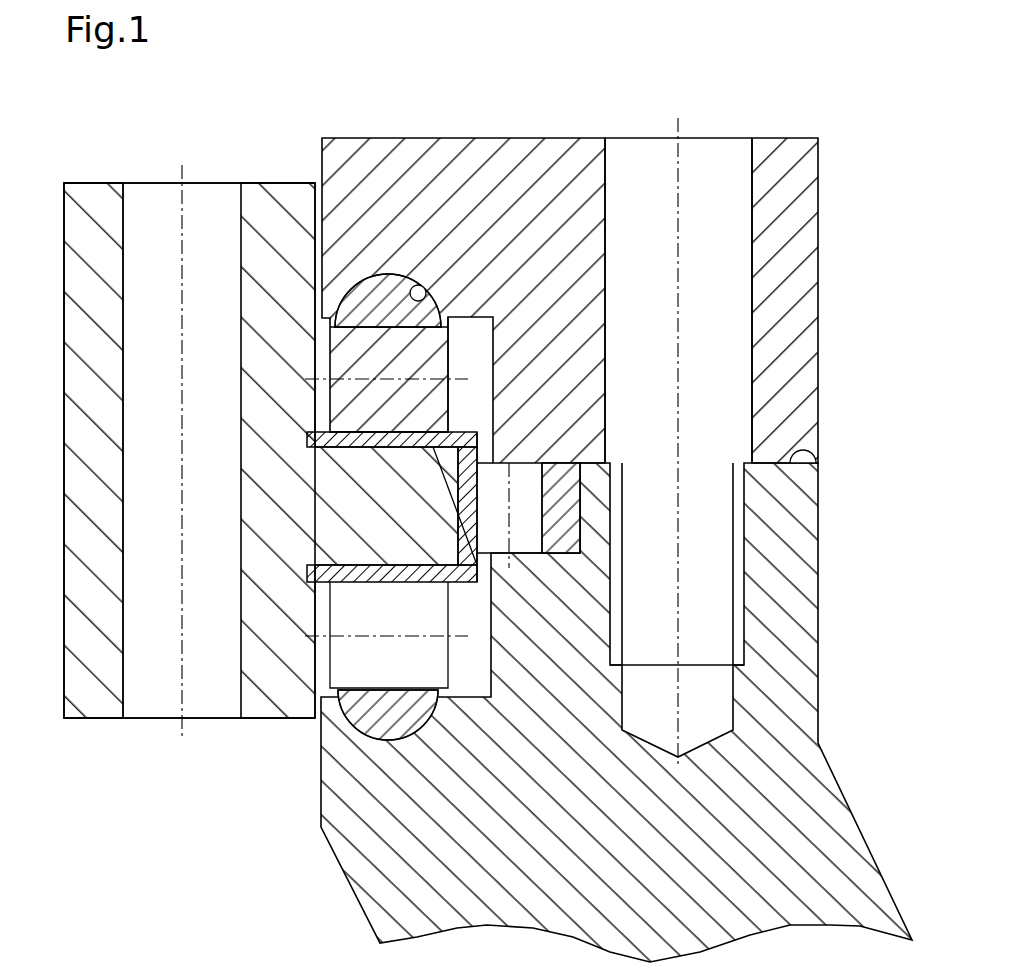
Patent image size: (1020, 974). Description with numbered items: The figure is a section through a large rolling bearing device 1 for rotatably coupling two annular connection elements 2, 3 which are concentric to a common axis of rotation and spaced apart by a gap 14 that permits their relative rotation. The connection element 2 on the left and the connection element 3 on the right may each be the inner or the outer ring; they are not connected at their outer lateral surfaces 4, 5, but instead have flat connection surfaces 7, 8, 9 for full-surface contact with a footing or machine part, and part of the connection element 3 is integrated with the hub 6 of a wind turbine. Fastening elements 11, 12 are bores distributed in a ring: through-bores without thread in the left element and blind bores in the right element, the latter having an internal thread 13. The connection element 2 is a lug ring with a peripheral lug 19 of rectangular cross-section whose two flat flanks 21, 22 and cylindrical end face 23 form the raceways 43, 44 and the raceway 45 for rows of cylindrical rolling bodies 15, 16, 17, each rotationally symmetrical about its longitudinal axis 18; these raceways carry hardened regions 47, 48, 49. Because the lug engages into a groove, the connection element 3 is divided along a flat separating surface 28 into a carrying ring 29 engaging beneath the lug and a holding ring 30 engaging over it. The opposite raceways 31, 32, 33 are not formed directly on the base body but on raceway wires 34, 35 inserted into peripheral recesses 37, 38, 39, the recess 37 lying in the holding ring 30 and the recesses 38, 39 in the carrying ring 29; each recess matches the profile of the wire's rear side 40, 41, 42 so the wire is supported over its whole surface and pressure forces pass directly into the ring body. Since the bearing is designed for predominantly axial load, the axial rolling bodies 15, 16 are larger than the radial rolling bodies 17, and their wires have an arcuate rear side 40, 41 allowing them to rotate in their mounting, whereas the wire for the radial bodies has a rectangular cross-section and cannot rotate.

The device 1 is at (650, 74).
The connection element 2 is at (82, 693).
The connection element 3 is at (790, 360).
The outer lateral surface 4 is at (64, 425).
The outer lateral surface 5 is at (818, 270).
The hub 6 is at (805, 826).
The flat connection surface 7 is at (85, 183).
The flat connection surface 8 is at (116, 718).
The flat connection surface 9 is at (790, 138).
The fastening element 11 is at (123, 228).
The fastening element 12 is at (605, 203).
The internal thread 13 is at (735, 560).
The gap 14 is at (470, 350).
The cylindrical rolling body 15 is at (347, 348).
The cylindrical rolling body 16 is at (317, 636).
The cylindrical rolling body 17 is at (534, 506).
The longitudinal axis 18 is at (305, 379).
The lug 19 is at (482, 496).
The flank 21 is at (330, 430).
The flank 22 is at (330, 568).
The end face 23 is at (480, 434).
The separating surface 28 is at (808, 448).
The carrying ring 29 is at (782, 704).
The holding ring 30 is at (790, 205).
The raceway 31 is at (367, 333).
The raceway 32 is at (337, 675).
The raceway 33 is at (530, 484).
The raceway wire 34 is at (367, 300).
The raceway wire 35 is at (352, 782).
The recess 37 is at (430, 298).
The recess 38 is at (322, 742).
The recess 39 is at (568, 558).
The rear side 40 is at (380, 269).
The rear side 41 is at (350, 760).
The rear side 42 is at (556, 529).
The raceway 43 is at (413, 420).
The raceway 44 is at (362, 594).
The raceway 45 is at (460, 520).
The hardened region 47 is at (480, 465).
The hardened region 48 is at (312, 578).
The hardened region 49 is at (450, 545).